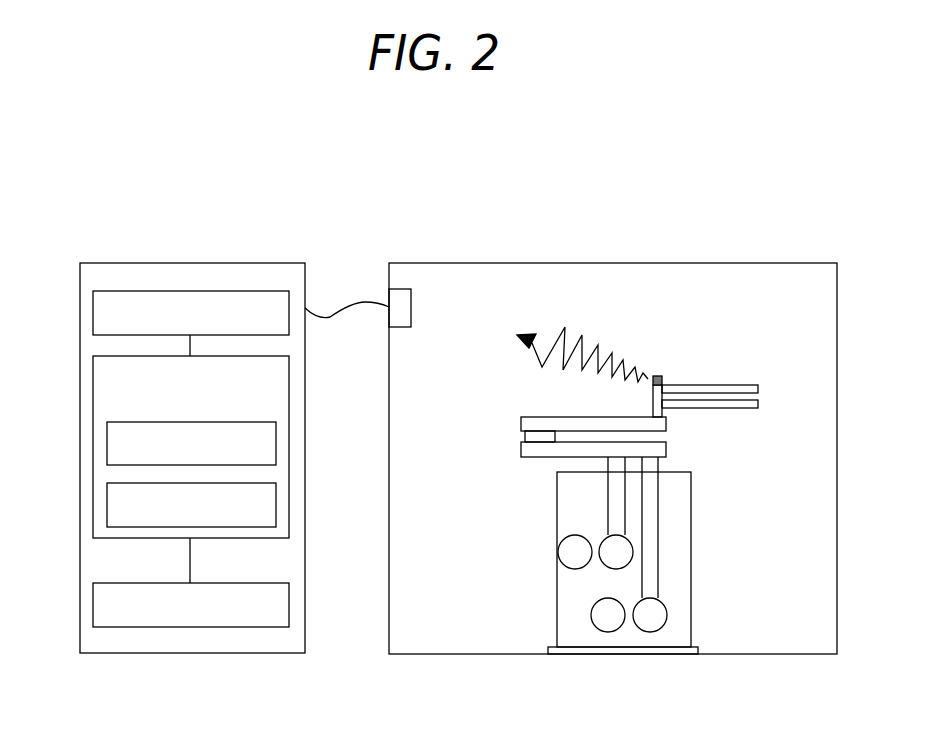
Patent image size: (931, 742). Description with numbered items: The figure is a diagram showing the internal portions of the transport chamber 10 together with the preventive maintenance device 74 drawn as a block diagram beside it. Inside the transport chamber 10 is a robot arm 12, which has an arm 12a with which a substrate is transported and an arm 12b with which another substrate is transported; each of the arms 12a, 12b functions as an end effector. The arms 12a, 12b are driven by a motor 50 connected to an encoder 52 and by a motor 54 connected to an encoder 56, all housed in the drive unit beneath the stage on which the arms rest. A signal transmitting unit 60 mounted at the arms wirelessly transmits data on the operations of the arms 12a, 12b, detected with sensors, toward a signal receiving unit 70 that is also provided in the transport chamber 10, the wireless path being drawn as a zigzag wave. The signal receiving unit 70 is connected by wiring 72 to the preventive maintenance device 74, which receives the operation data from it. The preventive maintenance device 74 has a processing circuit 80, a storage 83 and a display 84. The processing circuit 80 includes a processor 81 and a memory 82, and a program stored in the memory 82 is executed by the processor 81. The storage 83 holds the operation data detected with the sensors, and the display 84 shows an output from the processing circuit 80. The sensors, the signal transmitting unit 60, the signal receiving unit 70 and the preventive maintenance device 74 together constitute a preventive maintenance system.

The transport chamber 10 is at (748, 263).
The robot arm 12 is at (742, 360).
The arm 12a is at (758, 389).
The arm 12b is at (758, 404).
The motor 50 is at (668, 614).
The encoder 52 is at (591, 615).
The motor 54 is at (604, 538).
The encoder 56 is at (558, 546).
The signal transmitting unit 60 is at (662, 380).
The signal receiving unit 70 is at (397, 289).
The wiring 72 is at (330, 317).
The preventive maintenance device 74 is at (118, 263).
The processing circuit 80 is at (93, 390).
The processor 81 is at (107, 445).
The memory 82 is at (107, 504).
The storage 83 is at (93, 604).
The display 84 is at (93, 312).